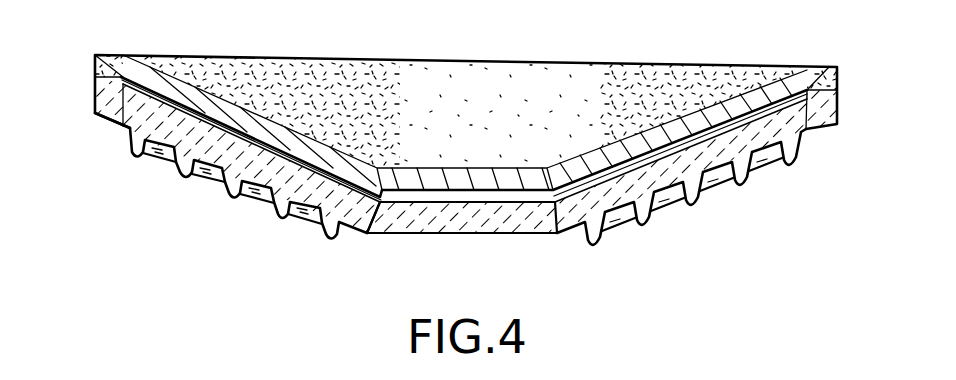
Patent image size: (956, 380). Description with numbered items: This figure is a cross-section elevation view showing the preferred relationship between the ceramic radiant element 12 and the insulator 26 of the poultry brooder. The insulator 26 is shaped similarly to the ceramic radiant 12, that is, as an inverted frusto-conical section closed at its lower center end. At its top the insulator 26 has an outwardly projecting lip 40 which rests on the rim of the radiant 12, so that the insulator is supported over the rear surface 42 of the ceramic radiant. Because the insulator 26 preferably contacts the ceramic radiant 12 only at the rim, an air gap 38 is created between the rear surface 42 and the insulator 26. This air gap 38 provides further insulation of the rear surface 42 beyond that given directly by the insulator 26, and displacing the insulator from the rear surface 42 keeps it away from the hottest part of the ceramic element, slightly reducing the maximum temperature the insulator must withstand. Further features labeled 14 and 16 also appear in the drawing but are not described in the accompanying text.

The ceramic radiant element 12 is at (810, 122).
The ribs 14 is at (797, 161).
The rib side faces 16 is at (757, 167).
The insulator 26 is at (729, 112).
The air gap 38 is at (477, 202).
The outwardly projecting lip 40 is at (810, 68).
The rear surface 42 is at (374, 210).